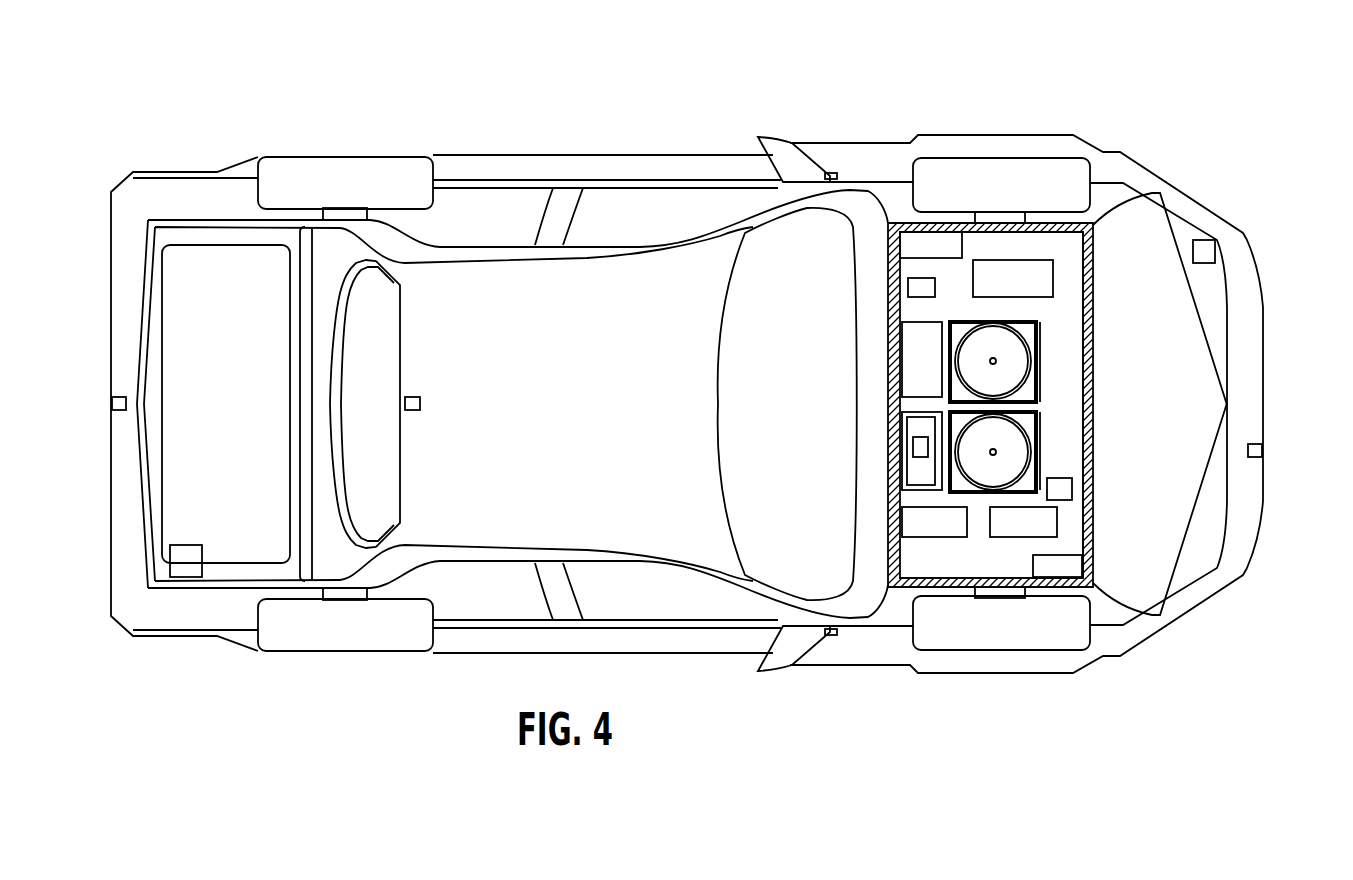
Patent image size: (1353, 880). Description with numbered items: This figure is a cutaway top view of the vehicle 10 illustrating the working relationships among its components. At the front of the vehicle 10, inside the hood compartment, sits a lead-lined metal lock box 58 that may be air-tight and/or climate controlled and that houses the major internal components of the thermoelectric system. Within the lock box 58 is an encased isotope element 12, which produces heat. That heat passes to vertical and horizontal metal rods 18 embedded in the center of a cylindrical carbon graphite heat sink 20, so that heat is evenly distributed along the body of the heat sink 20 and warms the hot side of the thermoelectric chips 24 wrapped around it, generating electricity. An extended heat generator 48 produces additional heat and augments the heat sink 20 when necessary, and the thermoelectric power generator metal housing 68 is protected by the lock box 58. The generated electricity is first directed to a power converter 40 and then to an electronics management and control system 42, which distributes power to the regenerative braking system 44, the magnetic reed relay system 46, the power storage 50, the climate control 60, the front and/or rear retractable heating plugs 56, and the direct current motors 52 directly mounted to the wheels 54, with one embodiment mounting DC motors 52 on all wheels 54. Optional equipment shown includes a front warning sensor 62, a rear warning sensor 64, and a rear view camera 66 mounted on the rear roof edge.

The vehicle 10 is at (1178, 118).
The encased isotope element 12 is at (917, 443).
The vertical and horizontal metal rods 18 is at (993, 361).
The carbon graphite heat sink 20 is at (1003, 337).
The thermoelectric chips 24 is at (1033, 457).
The power converter 40 is at (1065, 489).
The electronics management and control system 42 is at (907, 348).
The regenerative braking system 44 is at (1047, 517).
The magnetic reed relay system 46 is at (910, 518).
The extended heat generator 48 is at (910, 286).
The power storage 50 is at (1075, 563).
The direct current (DC) motors 52 is at (1003, 217).
The wheels 54 is at (343, 170).
The front and/or rear retractable heating plugs 56 is at (180, 572).
The lead-lined metal lock box 58 is at (1093, 370).
The climate control 60 is at (907, 245).
The front warning sensor 62 is at (1262, 450).
The rear warning sensor 64 is at (112, 398).
The rear view camera 66 is at (410, 398).
The thermoelectric power generator metal housing 68 is at (1038, 430).